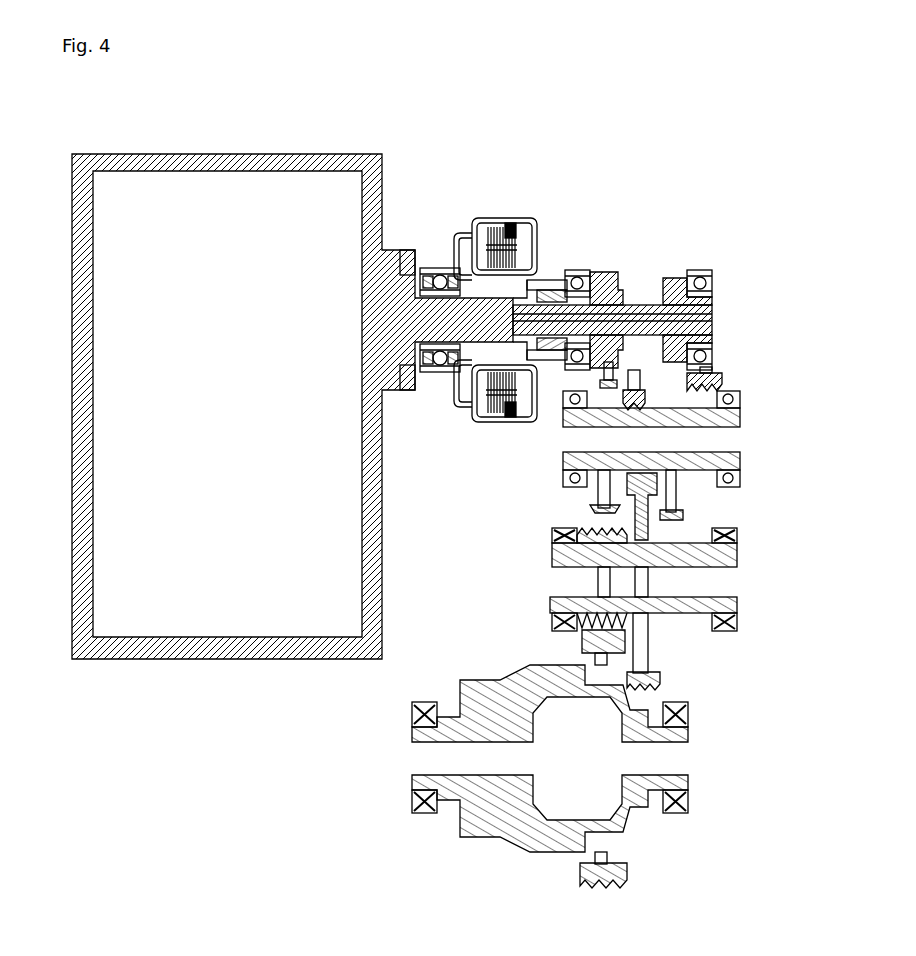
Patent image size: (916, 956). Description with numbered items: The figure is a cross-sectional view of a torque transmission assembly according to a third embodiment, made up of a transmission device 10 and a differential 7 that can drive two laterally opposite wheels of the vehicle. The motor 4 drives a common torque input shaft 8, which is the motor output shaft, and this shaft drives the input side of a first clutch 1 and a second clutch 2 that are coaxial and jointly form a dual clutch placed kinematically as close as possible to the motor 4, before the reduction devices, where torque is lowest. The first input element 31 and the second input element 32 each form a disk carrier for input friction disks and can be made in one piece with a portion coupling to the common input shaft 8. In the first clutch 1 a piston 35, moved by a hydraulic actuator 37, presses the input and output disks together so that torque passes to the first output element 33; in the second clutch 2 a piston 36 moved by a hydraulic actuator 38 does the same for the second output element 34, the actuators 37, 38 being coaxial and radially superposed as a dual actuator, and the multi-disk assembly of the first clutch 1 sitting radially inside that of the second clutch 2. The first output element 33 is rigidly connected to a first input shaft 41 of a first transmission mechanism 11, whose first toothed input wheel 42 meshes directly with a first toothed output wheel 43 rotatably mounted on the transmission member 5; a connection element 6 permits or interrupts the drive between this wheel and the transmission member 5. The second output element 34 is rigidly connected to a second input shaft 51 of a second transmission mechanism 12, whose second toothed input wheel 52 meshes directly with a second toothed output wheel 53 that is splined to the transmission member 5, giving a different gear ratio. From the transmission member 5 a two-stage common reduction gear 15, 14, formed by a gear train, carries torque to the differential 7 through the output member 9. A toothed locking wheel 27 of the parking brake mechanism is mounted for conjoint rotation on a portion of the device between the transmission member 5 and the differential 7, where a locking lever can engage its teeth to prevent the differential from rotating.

The first clutch 1 is at (455, 253).
The second clutch 2 is at (513, 231).
The motor 4 is at (216, 215).
The transmission member 5 is at (643, 402).
The connection element 6 is at (724, 379).
The differential 7 is at (506, 800).
The common torque input shaft 8 is at (440, 378).
The output member 9 is at (590, 538).
The transmission device 10 is at (750, 325).
The first transmission mechanism 11 is at (690, 242).
The second transmission mechanism 12 is at (618, 242).
The common reduction gear stage 14 is at (632, 722).
The common reduction gear stage 15 is at (651, 549).
The toothed locking wheel 27 is at (732, 608).
The first input element 31 is at (471, 262).
The second input element 32 is at (488, 228).
The first output element 33 is at (553, 289).
The second output element 34 is at (529, 280).
The piston 35 is at (400, 282).
The piston 36 is at (455, 376).
The hydraulic actuator 37 is at (420, 392).
The hydraulic actuator 38 is at (400, 273).
The first input shaft 41 is at (645, 302).
The first toothed input wheel 42 is at (672, 287).
The first toothed output wheel 43 is at (714, 364).
The second input shaft 51 is at (557, 368).
The second toothed input wheel 52 is at (600, 278).
The second toothed output wheel 53 is at (592, 501).